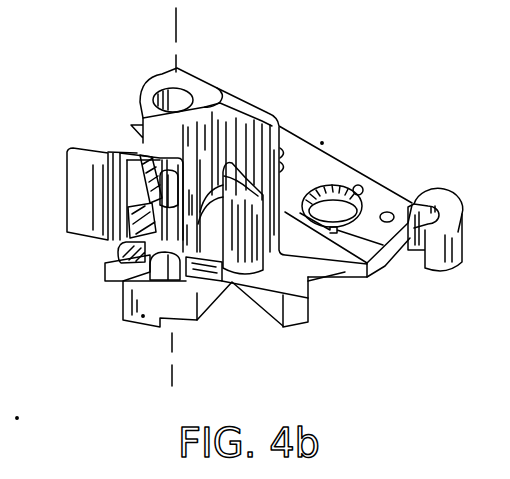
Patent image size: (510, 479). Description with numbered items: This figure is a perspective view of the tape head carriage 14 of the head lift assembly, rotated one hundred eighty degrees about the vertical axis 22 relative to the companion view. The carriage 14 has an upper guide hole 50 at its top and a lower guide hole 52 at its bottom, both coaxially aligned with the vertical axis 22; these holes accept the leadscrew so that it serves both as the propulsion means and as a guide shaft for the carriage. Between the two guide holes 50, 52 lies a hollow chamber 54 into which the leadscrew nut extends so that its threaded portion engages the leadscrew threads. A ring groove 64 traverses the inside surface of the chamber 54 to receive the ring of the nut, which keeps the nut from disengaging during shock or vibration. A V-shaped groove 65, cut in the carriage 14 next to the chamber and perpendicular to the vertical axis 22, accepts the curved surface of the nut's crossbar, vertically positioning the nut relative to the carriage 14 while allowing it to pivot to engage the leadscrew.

The tape head carriage 14 is at (227, 125).
The vertical axis 22 is at (172, 380).
The upper guide hole 50 is at (174, 108).
The lower guide hole 52 is at (162, 258).
The hollow chamber 54 is at (143, 158).
The ring groove 64 is at (135, 238).
The V-shaped groove 65 is at (128, 247).